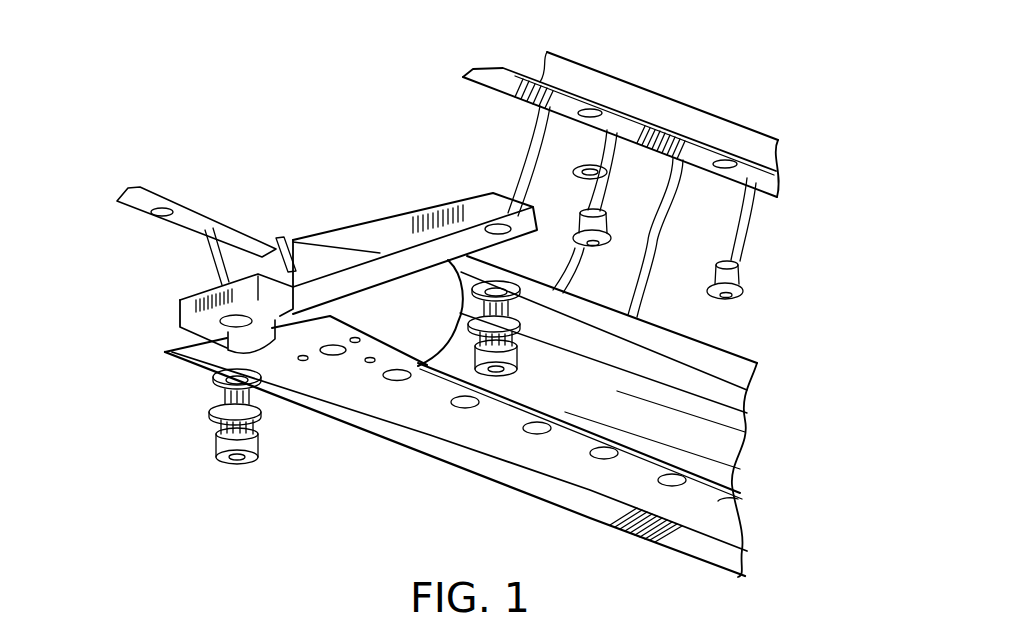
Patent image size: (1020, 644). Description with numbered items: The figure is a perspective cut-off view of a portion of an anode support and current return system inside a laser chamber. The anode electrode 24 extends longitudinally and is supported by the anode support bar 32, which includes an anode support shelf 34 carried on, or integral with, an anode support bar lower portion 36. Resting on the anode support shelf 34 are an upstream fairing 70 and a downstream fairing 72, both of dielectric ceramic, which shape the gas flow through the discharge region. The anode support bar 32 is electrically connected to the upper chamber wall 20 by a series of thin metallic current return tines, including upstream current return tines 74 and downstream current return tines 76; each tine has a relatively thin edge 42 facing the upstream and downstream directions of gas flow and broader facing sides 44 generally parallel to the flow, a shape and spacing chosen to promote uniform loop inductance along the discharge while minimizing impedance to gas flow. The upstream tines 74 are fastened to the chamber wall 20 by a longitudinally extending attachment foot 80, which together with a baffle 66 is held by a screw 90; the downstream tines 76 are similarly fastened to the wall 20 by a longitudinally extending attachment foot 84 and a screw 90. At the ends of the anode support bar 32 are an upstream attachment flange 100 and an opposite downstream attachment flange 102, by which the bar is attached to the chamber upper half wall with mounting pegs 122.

The upper chamber wall 20 is at (592, 78).
The longitudinally extending attachment foot 84 is at (647, 147).
The downstream current return tine 76 is at (532, 143).
The baffle 66 is at (586, 166).
The screw 90 is at (580, 225).
The broader facing sides 44 is at (658, 240).
The thin edge 42 is at (563, 263).
The upstream current return tine 74 is at (208, 278).
The downstream fairing 72 is at (337, 244).
The downstream attachment flange 102 is at (460, 217).
The anode support shelf 34 is at (350, 263).
The anode electrode 24 is at (297, 239).
The upstream fairing 70 is at (260, 230).
The longitudinally extending attachment foot 80 is at (117, 200).
The upstream attachment flange 100 is at (182, 315).
The anode support bar 32 is at (320, 337).
The anode support bar lower portion 36 is at (423, 358).
The mounting pegs 122 is at (220, 424).